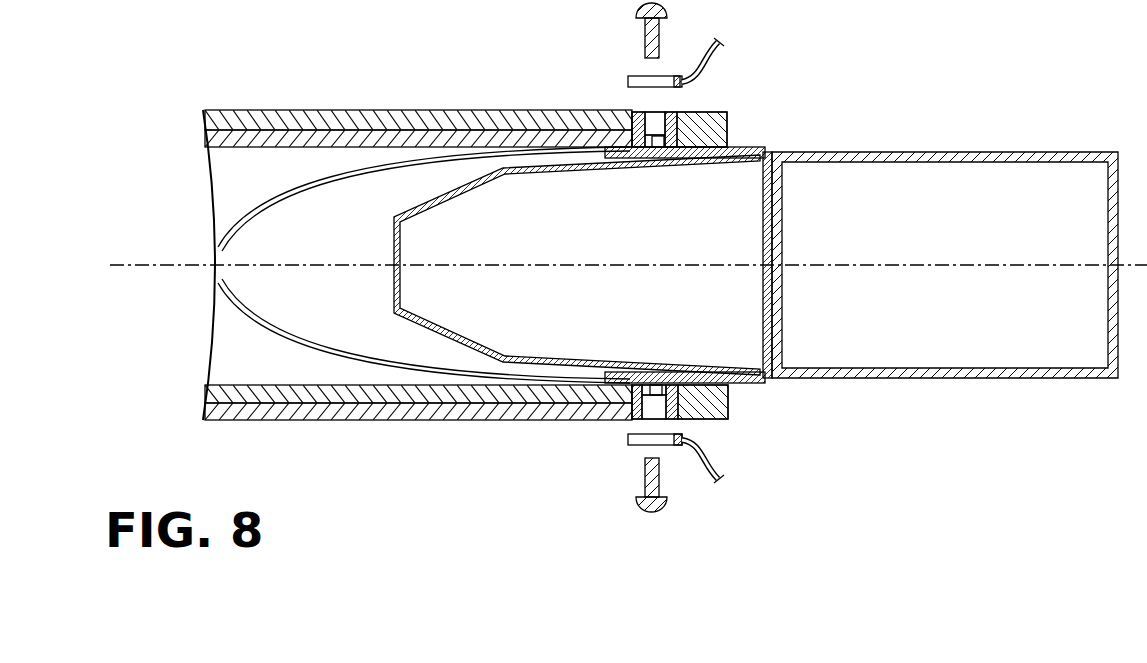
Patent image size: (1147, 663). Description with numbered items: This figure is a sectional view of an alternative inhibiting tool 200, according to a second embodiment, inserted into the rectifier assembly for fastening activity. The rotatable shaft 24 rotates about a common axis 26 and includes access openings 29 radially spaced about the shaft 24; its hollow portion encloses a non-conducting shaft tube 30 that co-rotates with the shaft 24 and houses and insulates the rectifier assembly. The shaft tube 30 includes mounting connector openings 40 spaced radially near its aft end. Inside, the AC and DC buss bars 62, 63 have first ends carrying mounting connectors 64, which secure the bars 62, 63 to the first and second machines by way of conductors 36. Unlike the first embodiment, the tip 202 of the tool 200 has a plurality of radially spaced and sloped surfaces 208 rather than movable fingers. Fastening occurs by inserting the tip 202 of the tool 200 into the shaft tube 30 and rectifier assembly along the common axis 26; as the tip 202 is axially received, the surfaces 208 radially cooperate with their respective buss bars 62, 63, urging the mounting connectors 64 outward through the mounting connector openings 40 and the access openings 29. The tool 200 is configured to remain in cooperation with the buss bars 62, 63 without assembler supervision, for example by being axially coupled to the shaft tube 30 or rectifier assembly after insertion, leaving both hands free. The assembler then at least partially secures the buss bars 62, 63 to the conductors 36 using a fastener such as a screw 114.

The rotatable shaft 24 is at (418, 234).
The common axis 26 is at (178, 262).
The access openings 29 is at (640, 118).
The shaft tube 30 is at (357, 128).
The conductors 36 is at (706, 58).
The mounting connector openings 40 is at (622, 125).
The AC buss bar 62 is at (267, 203).
The DC buss bar 63 is at (270, 325).
The mounting connectors 64 is at (672, 112).
The screw 114 is at (640, 40).
The inhibiting tool 200 is at (995, 150).
The tip 202 is at (388, 314).
The sloped surfaces 208 is at (765, 150).